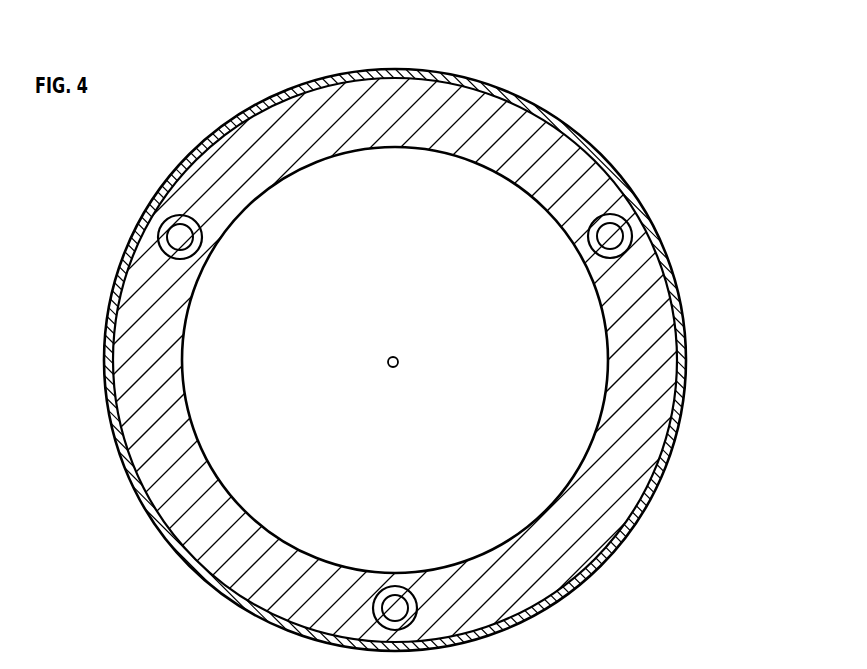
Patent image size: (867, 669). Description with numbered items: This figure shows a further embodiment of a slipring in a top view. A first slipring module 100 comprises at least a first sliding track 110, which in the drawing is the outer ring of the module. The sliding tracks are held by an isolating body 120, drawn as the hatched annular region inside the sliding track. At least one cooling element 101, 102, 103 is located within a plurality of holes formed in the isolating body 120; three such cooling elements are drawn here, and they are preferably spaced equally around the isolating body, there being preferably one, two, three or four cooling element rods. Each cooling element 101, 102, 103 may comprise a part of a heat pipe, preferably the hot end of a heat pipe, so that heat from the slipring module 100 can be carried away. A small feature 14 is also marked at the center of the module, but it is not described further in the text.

The first slipring module 100 is at (626, 96).
The first sliding track 110 is at (680, 355).
The isolating body 120 is at (160, 359).
The cooling element 101 is at (180, 237).
The cooling element 102 is at (610, 236).
The cooling element 103 is at (395, 608).
The central opening / sensor element 14 is at (399, 361).